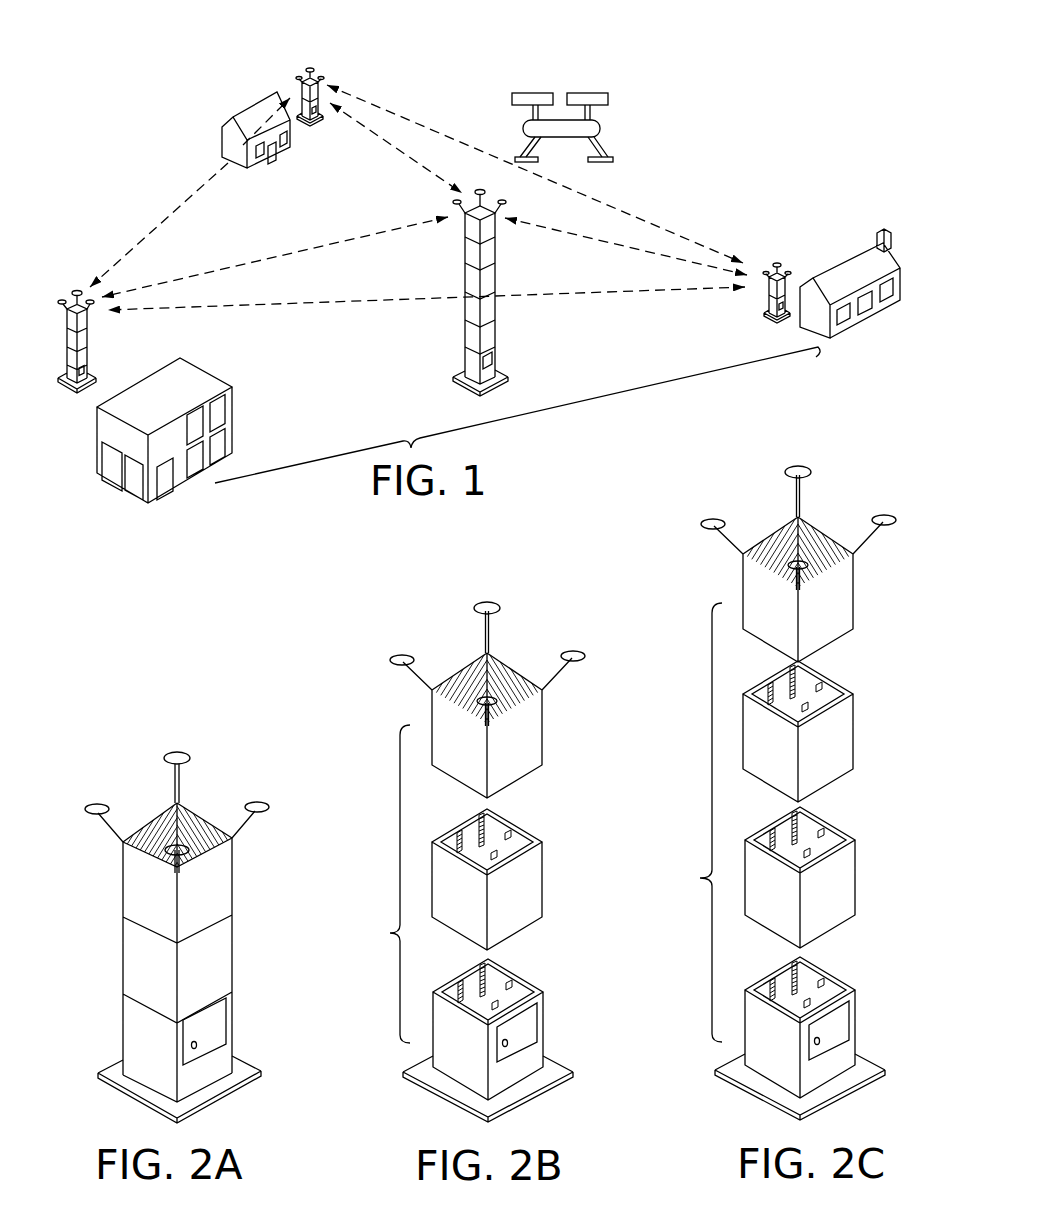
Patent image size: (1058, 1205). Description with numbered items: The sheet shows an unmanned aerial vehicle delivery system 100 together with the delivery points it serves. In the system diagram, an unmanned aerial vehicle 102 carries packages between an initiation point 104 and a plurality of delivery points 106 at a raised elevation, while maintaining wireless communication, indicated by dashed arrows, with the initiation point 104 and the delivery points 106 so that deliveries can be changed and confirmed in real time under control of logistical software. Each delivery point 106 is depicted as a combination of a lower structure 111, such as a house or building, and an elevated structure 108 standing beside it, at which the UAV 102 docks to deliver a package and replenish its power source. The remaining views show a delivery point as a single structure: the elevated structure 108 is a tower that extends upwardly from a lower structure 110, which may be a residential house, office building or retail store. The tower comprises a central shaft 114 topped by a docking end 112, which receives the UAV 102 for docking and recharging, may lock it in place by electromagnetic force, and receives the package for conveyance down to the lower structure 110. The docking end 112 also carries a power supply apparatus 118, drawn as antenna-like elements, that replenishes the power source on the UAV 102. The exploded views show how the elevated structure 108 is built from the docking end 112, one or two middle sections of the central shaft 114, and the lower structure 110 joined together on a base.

In FIG. 1, the unmanned aerial vehicle delivery system 100 is at (702, 150).
In FIG. 1, the unmanned aerial vehicle 102 is at (520, 125).
In FIG. 1, the initiation point 104 is at (495, 305).
In FIG. 1, the delivery point 106 is at (830, 233).
In FIG. 1, the elevated structure 108 is at (300, 86).
In FIG. 2A, the elevated structure 108 is at (108, 969).
In FIG. 2A, the lower structure 110 is at (230, 1012).
In FIG. 2B, the lower structure 110 is at (543, 1017).
In FIG. 2C, the lower structure 110 is at (857, 1008).
In FIG. 1, the lower structure 111 is at (233, 115).
In FIG. 2A, the docking end 112 is at (147, 823).
In FIG. 2B, the docking end 112 is at (513, 663).
In FIG. 2C, the docking end 112 is at (823, 525).
In FIG. 2A, the central shaft 114 is at (233, 958).
In FIG. 2B, the central shaft 114 is at (543, 865).
In FIG. 2C, the central shaft 114 is at (850, 860).
In FIG. 2A, the power supply apparatus 118 is at (248, 802).
In FIG. 2B, the power supply apparatus 118 is at (442, 618).
In FIG. 2C, the power supply apparatus 118 is at (757, 475).